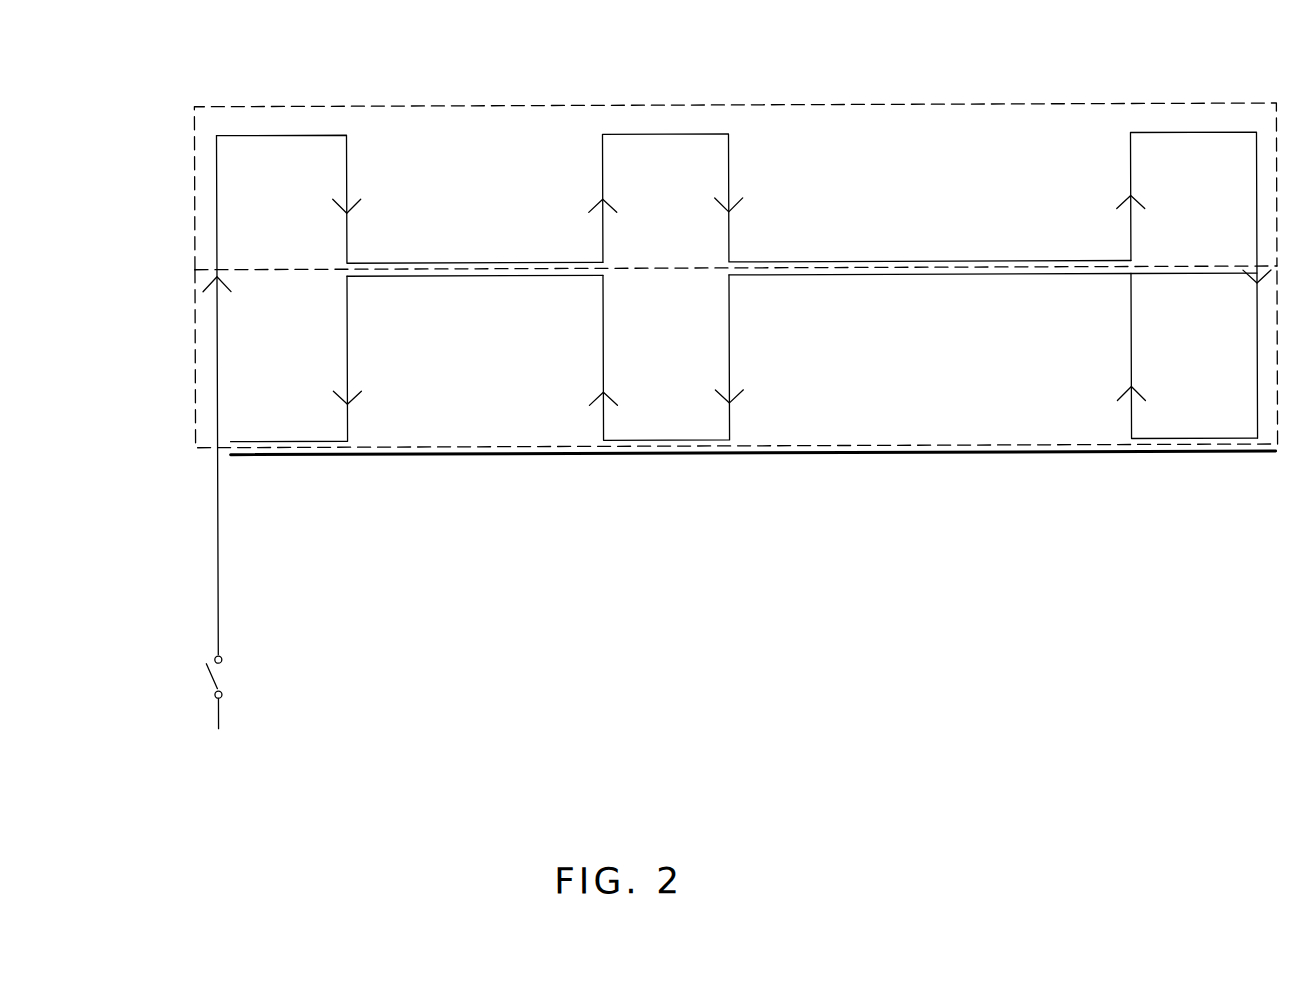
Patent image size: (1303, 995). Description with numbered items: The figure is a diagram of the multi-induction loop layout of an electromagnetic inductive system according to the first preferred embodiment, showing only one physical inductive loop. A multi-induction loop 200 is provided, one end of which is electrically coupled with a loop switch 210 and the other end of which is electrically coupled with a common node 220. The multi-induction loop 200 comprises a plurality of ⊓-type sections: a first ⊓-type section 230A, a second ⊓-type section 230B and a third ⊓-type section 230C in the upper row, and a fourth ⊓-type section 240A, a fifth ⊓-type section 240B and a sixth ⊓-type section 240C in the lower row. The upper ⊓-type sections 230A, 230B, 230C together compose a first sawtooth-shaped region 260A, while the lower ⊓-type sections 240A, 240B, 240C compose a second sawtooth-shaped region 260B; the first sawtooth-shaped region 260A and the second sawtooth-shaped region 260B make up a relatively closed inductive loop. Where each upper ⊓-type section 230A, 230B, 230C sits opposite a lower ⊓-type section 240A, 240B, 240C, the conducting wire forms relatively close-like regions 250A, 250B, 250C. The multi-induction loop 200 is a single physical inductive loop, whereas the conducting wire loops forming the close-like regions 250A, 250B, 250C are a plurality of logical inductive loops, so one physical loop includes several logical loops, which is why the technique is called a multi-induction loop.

The multi-induction loop 200 is at (217, 535).
The loop switch 210 is at (217, 713).
The common node 220 is at (912, 455).
The first ⊓-type section 230A is at (255, 197).
The second ⊓-type section 230B is at (665, 158).
The third ⊓-type section 230C is at (1185, 148).
The fourth ⊓-type section 240A is at (257, 378).
The fifth ⊓-type section 240B is at (667, 412).
The sixth ⊓-type section 240C is at (1187, 413).
The close-like region 250A is at (403, 295).
The close-like region 250B is at (873, 292).
The close-like region 250C is at (1194, 290).
The first sawtooth-shaped region 260A is at (443, 107).
The second sawtooth-shaped region 260B is at (530, 448).